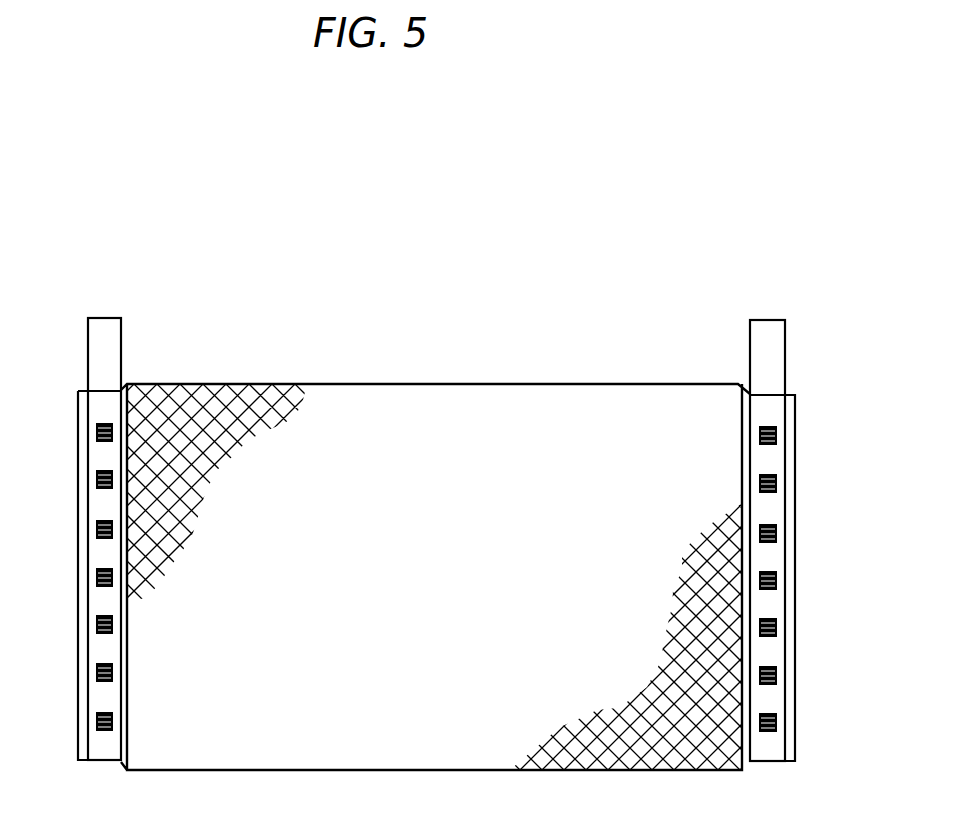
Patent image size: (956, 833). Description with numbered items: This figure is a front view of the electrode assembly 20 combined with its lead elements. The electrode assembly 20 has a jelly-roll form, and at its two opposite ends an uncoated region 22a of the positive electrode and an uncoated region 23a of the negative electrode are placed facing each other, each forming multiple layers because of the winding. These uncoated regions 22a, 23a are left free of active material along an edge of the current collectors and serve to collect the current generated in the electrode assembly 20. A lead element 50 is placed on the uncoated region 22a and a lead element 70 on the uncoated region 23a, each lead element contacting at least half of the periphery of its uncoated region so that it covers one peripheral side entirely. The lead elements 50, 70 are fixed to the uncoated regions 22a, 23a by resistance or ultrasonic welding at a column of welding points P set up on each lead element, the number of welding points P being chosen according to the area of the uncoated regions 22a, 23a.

The electrode assembly 20 is at (409, 354).
The lead element 50 is at (122, 350).
The lead element 70 is at (768, 320).
The uncoated region of the positive electrode 22a is at (77, 568).
The uncoated region of the negative electrode 23a is at (795, 588).
The welding points P is at (96, 433).